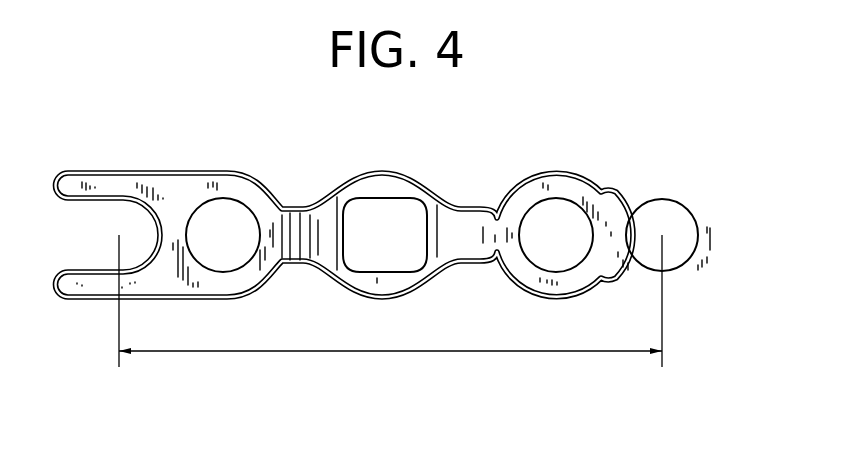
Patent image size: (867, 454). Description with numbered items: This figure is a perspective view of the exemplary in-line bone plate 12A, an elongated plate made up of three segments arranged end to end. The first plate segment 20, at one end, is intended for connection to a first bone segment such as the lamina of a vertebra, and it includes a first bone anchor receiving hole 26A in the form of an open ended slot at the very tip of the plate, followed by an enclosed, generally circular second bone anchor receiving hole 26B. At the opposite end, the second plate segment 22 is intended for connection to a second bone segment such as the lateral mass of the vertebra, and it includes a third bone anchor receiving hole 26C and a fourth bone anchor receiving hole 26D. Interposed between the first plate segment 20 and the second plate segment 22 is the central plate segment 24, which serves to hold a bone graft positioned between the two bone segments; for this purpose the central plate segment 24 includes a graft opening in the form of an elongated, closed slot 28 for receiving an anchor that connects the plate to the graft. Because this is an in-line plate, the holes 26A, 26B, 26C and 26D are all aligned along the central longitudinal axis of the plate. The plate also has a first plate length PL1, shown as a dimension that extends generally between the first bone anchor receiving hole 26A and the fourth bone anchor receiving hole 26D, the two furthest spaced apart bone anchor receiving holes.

The in-line bone plate 12A is at (496, 162).
The first plate segment 20 is at (203, 183).
The second plate segment 22 is at (617, 200).
The central plate segment 24 is at (380, 186).
The first bone anchor receiving hole 26A is at (105, 218).
The second bone anchor receiving hole 26B is at (243, 224).
The third bone anchor receiving hole 26C is at (558, 212).
The fourth bone anchor receiving hole 26D is at (683, 218).
The elongated, closed slot 28 is at (407, 220).
The first plate length PL1 is at (357, 352).